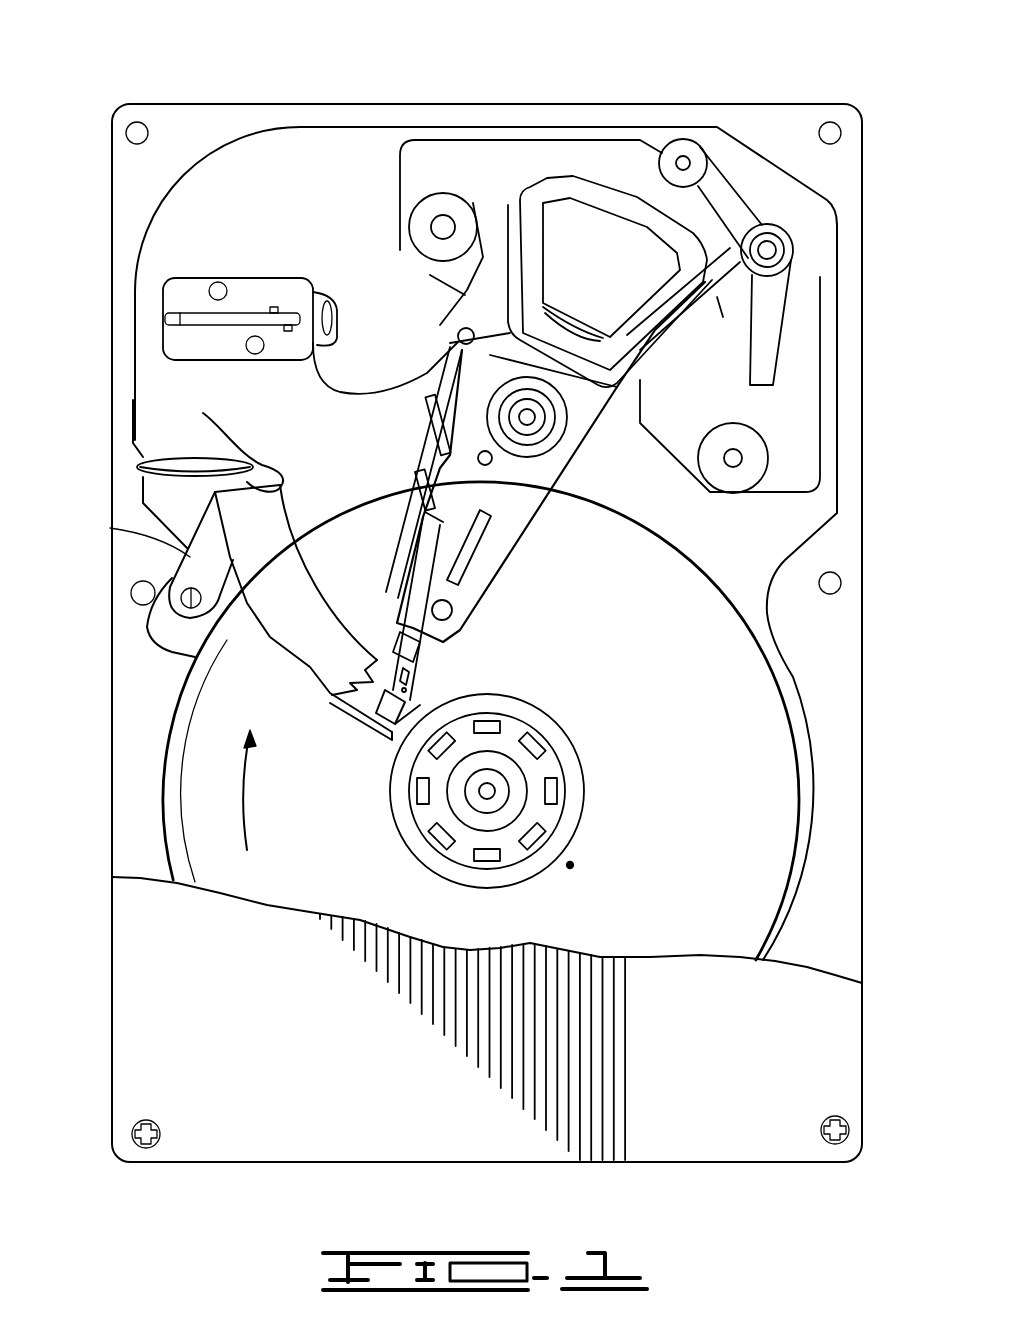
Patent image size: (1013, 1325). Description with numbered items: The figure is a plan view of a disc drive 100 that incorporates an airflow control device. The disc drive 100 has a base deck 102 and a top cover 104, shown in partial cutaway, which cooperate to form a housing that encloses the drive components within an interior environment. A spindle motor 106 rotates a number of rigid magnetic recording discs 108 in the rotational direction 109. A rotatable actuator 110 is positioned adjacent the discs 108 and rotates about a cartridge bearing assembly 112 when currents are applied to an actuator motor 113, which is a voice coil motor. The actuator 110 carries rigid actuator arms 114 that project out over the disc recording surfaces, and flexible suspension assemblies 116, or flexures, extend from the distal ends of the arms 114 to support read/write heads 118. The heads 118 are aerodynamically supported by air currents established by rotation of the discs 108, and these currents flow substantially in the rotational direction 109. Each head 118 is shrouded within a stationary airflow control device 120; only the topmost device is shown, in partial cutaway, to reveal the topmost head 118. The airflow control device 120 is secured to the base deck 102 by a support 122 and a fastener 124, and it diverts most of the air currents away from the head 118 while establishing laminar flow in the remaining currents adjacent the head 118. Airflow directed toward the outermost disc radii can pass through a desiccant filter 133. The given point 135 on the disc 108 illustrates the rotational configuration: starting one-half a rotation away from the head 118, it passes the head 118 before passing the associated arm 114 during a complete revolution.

The disc drive 100 is at (220, 62).
The base deck 102 is at (313, 178).
The top cover 104 is at (172, 957).
The spindle motor 106 is at (520, 781).
The rigid magnetic recording discs 108 is at (772, 800).
The rotational direction 109 is at (243, 795).
The rotatable actuator 110 is at (506, 469).
The cartridge bearing assembly 112 is at (532, 432).
The actuator motor 113 is at (620, 160).
The rigid actuator arms 114 is at (495, 552).
The flexible suspension assemblies 116 is at (455, 665).
The read/write heads 118 is at (388, 720).
The airflow control device 120 is at (258, 528).
The support 122 is at (190, 545).
The fastener 124 is at (181, 600).
The desiccant filter 133 is at (175, 457).
The given point on the disc 135 is at (583, 858).